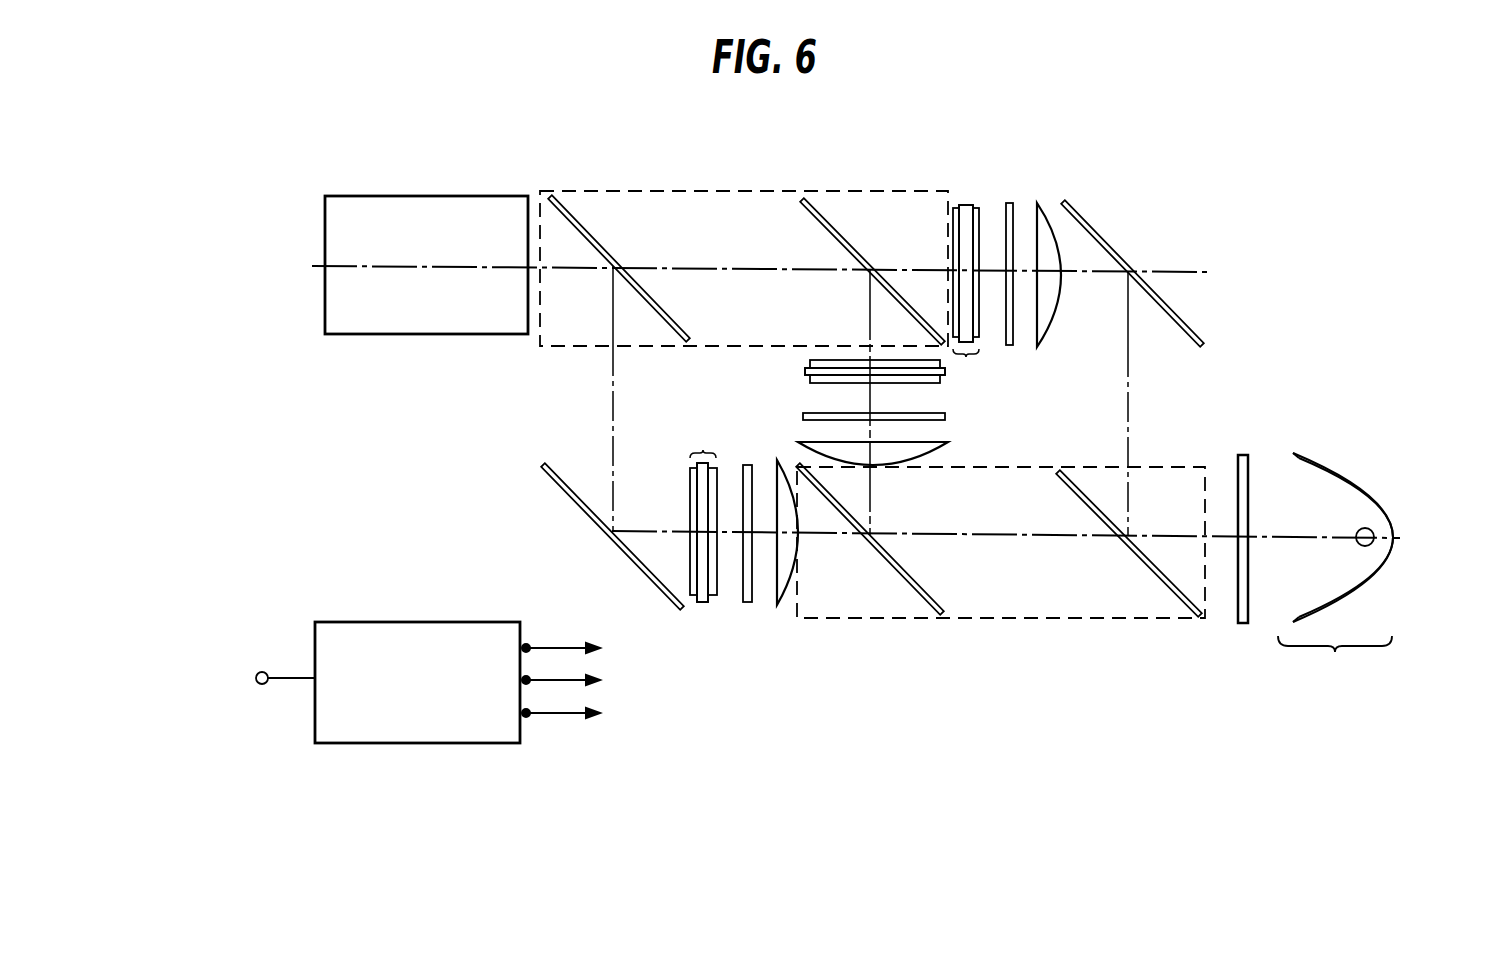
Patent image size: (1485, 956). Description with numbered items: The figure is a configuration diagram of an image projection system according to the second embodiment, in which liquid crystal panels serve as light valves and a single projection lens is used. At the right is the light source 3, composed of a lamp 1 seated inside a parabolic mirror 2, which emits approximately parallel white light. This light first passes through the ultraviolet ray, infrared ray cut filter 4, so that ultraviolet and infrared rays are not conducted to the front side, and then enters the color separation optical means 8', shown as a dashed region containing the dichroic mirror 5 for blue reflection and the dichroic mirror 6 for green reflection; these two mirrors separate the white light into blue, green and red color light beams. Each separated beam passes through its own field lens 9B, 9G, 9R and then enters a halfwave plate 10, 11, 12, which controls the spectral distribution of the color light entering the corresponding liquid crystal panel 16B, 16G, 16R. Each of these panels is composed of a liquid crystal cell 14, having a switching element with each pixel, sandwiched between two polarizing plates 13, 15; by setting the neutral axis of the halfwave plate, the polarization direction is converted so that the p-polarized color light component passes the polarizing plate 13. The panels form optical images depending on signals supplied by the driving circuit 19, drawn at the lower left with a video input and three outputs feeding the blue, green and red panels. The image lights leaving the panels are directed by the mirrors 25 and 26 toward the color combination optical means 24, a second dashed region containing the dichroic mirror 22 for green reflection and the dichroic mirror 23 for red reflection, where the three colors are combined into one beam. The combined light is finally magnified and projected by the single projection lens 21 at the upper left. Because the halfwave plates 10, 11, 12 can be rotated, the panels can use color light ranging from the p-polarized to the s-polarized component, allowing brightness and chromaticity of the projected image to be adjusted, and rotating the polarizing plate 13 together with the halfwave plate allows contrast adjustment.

The lamp 1 is at (1368, 530).
The parabolic mirror 2 is at (1352, 480).
The light source 3 is at (1348, 567).
The ultraviolet ray, infrared ray cut filter 4 is at (1247, 610).
The dichroic mirror for blue reflection 5 is at (1182, 608).
The dichroic mirror for green reflection 6 is at (925, 600).
The color separation optical means 8' is at (1001, 571).
The field lens 9B is at (1037, 210).
The field lens 9G is at (948, 442).
The field lens 9R is at (786, 607).
The halfwave plate 10 is at (1007, 205).
The halfwave plate 11 is at (945, 413).
The halfwave plate 12 is at (748, 602).
The polarizing plate 13 is at (975, 210).
The liquid crystal cell 14 is at (962, 206).
The polarizing plate 15 is at (954, 236).
The liquid crystal panel 16B is at (976, 297).
The liquid crystal panel 16G is at (841, 372).
The liquid crystal panel 16R is at (705, 507).
The driving circuit 19 is at (420, 622).
The projection lens 21 is at (442, 196).
The dichroic mirror for green reflection 22 is at (832, 228).
The dichroic mirror for red reflection 23 is at (583, 230).
The color combination optical means 24 is at (657, 189).
The mirror 25 is at (1088, 227).
The mirror 26 is at (612, 543).